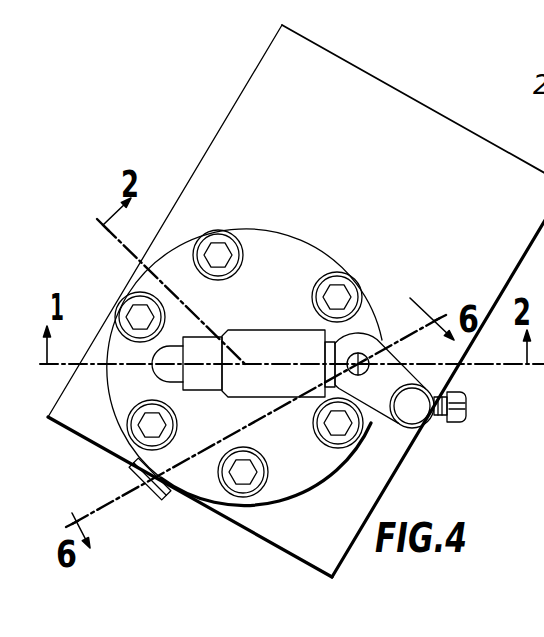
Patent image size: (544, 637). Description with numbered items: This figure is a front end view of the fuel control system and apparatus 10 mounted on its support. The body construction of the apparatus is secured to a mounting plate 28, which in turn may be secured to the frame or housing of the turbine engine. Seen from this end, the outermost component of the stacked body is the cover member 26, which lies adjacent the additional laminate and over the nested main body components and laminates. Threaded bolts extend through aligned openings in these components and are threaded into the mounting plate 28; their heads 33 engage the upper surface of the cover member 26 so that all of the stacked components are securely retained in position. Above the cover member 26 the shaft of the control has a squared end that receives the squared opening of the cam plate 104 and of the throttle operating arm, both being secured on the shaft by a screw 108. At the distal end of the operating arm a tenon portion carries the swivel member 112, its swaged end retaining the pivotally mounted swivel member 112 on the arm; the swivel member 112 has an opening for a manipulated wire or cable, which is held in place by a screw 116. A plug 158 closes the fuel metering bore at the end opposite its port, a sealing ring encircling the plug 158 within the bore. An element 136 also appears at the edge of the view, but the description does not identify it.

The mounting plate 28 is at (338, 73).
The fuel control system and apparatus 10 is at (276, 226).
The cover member 26 is at (287, 246).
The heads of the bolts 33 is at (220, 250).
The cam plate 104 is at (386, 338).
The screw 108 is at (360, 350).
The swivel member 112 is at (417, 428).
The screw 116 is at (440, 421).
The plug 158 is at (140, 502).
The member 136 is at (543, 66).